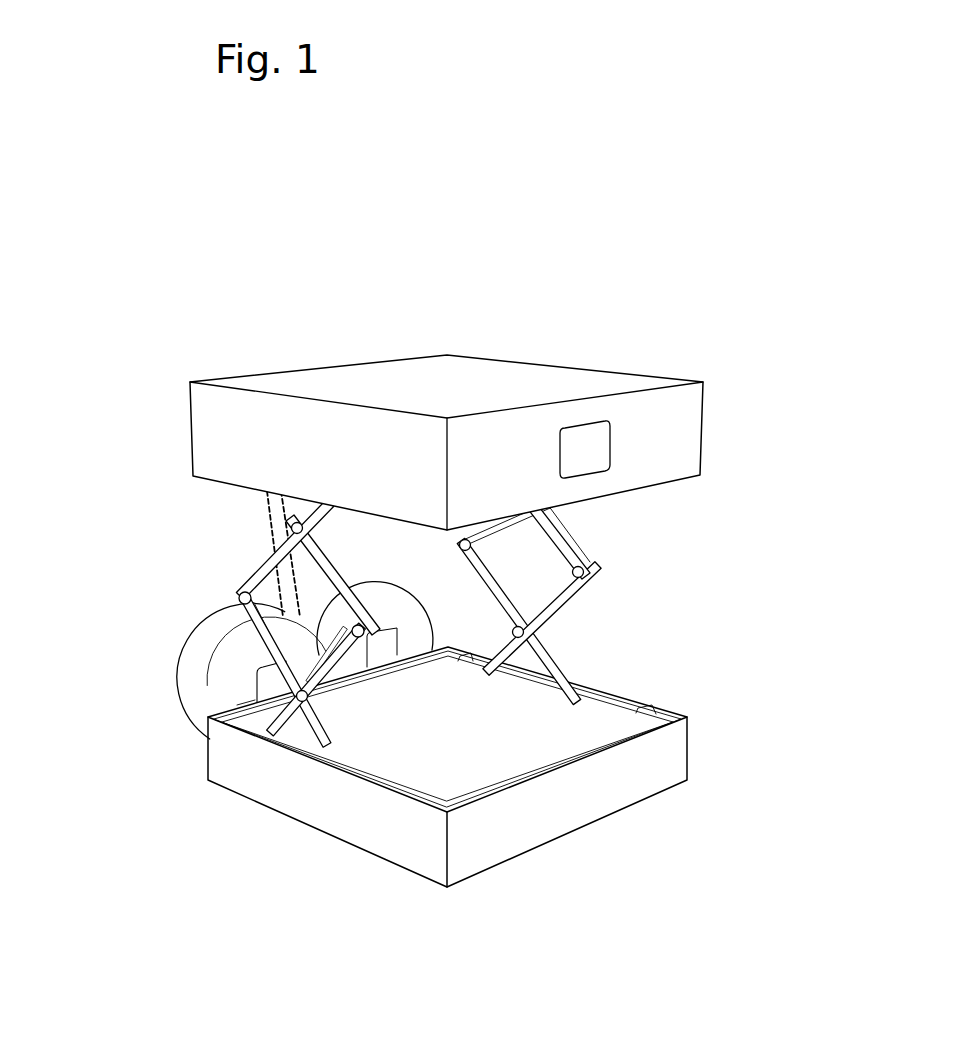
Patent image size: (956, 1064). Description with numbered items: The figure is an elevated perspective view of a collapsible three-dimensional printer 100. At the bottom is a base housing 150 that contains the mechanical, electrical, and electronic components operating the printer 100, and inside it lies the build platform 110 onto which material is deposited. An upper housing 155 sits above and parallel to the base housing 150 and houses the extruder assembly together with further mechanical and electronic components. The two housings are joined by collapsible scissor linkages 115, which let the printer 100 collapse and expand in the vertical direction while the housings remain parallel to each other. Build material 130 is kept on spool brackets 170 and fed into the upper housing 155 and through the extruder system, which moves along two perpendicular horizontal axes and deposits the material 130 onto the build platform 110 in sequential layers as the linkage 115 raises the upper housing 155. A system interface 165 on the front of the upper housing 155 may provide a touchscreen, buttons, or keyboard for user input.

The collapsible 3D printer 100 is at (692, 346).
The build platform 110 is at (570, 725).
The collapsible scissor linkages 115 is at (280, 559).
The build material 130 is at (198, 665).
The base housing 150 is at (330, 812).
The upper housing 155 is at (253, 441).
The system interface 165 is at (590, 452).
The spool brackets 170 is at (277, 687).